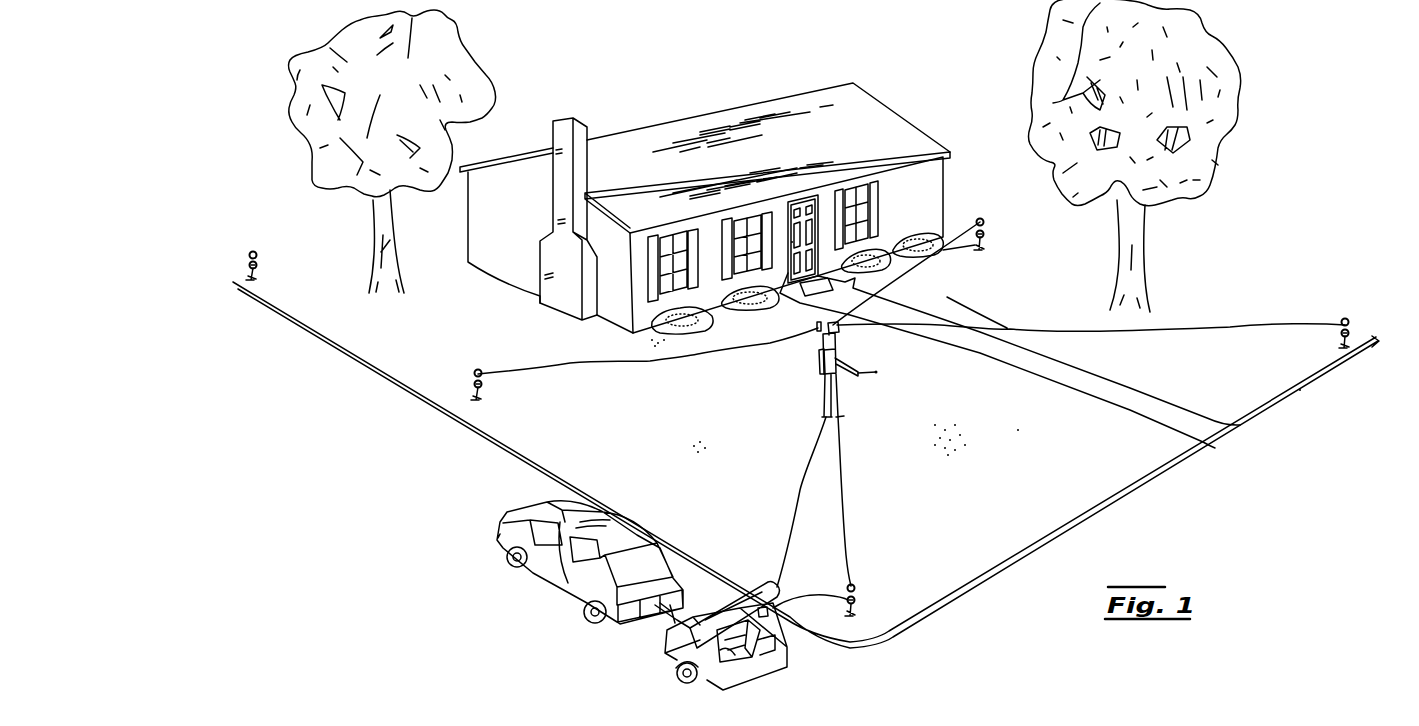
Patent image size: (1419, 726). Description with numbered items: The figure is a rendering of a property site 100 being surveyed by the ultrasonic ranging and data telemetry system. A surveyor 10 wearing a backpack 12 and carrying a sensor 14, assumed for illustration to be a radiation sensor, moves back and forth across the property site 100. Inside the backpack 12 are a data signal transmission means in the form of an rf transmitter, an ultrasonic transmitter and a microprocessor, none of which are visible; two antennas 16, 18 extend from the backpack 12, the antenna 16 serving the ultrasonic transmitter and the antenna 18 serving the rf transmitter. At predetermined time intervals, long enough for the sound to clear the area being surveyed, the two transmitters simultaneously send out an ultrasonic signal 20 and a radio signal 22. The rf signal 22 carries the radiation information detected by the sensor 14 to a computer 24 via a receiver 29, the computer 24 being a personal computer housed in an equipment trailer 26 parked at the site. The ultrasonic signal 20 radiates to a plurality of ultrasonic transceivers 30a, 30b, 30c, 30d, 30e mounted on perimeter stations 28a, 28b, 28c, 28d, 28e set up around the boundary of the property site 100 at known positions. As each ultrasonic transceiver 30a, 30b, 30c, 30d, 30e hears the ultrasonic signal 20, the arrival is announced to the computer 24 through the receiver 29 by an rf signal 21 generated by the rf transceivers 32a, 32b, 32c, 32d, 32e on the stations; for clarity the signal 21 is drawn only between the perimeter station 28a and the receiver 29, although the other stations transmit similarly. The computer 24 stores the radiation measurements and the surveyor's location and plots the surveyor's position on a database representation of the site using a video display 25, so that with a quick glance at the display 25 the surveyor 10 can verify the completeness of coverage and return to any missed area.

The property site 100 is at (400, 417).
The surveyor 10 is at (835, 357).
The backpack 12 is at (820, 362).
The sensor 14 is at (876, 373).
The antenna 16 is at (816, 324).
The antenna 18 is at (838, 328).
The ultrasonic signal 20 is at (577, 363).
The rf signal 21 is at (805, 598).
The radio signal 22 is at (800, 458).
The computer 24 is at (753, 655).
The video display 25 is at (705, 675).
The equipment trailer 26 is at (667, 650).
The receiver 29 is at (770, 616).
The perimeter station 28a is at (862, 614).
The perimeter station 28b is at (1344, 348).
The perimeter station 28c is at (981, 247).
The perimeter station 28d is at (258, 277).
The perimeter station 28e is at (480, 403).
The ultrasonic transceiver 30a is at (856, 580).
The ultrasonic transceiver 30b is at (1350, 316).
The ultrasonic transceiver 30c is at (983, 217).
The ultrasonic transceiver 30d is at (256, 250).
The ultrasonic transceiver 30e is at (481, 367).
The rf transceiver 32a is at (857, 600).
The rf transceiver 32b is at (1351, 334).
The rf transceiver 32c is at (985, 235).
The rf transceiver 32d is at (258, 266).
The rf transceiver 32e is at (486, 386).